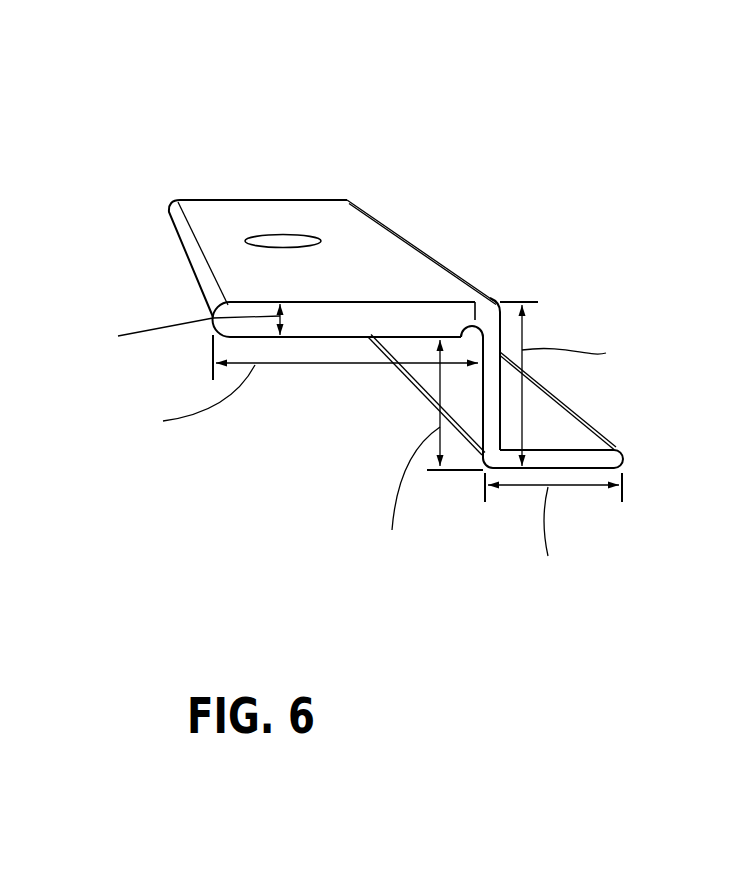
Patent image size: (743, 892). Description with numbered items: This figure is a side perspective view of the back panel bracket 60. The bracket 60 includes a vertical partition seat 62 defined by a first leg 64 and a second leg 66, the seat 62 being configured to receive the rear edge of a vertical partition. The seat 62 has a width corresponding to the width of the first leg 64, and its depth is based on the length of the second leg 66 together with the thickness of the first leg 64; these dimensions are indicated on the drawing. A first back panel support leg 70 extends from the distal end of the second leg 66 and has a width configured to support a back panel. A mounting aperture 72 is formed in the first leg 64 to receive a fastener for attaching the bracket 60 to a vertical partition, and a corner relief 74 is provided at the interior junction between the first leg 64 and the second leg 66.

The bracket 60 is at (349, 171).
The vertical partition seat 62 is at (340, 399).
The first leg 64 is at (378, 262).
The second leg 66 is at (500, 342).
The first back panel support leg 70 is at (627, 455).
The aperture 72 is at (282, 238).
The corner relief 74 is at (475, 325).